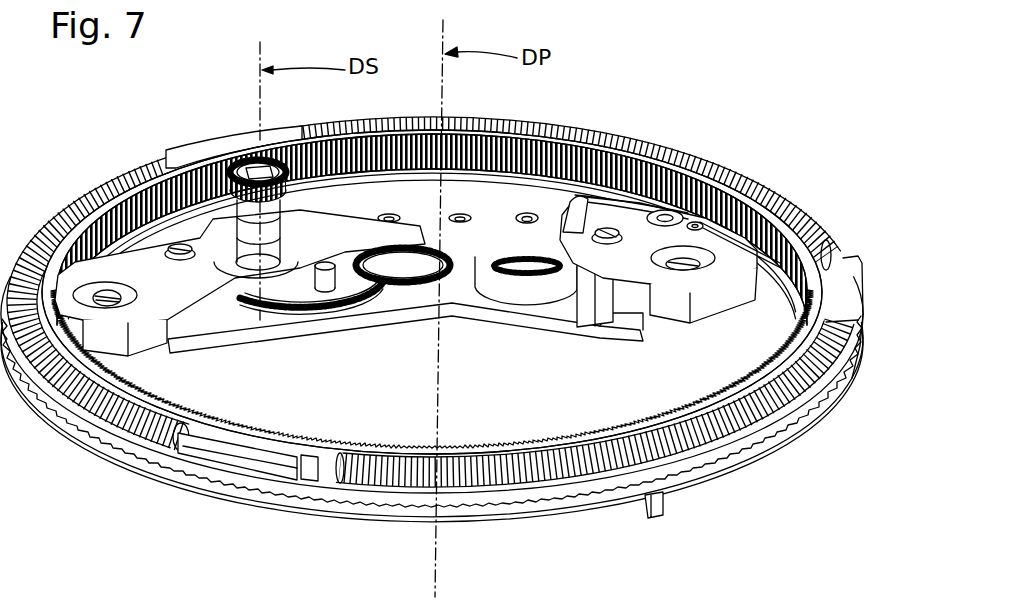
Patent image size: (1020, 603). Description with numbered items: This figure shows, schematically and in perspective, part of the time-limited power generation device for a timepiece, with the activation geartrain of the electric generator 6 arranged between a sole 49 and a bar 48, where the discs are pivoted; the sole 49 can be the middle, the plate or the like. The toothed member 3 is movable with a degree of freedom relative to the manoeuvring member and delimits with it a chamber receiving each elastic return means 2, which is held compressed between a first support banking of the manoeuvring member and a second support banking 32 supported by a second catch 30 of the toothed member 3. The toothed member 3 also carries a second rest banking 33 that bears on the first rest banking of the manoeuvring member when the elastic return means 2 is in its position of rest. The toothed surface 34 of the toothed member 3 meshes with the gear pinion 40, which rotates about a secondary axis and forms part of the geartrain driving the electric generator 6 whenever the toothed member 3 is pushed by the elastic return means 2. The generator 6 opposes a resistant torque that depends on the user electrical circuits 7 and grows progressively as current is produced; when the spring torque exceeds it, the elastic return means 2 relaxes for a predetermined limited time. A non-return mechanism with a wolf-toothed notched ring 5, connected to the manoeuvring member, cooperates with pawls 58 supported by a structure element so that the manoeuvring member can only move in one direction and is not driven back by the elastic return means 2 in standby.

The elastic return means 2 is at (393, 483).
The toothed member 3 is at (870, 298).
The notched ring 5 is at (520, 500).
The electric generator 6 is at (550, 297).
The user electrical circuits 7 is at (699, 190).
The second catch 30 is at (233, 462).
The second support banking 32 is at (165, 440).
The second rest banking 33 is at (309, 474).
The toothed surface 34 is at (258, 413).
The gear pinion 40 is at (242, 158).
The bar 48 is at (715, 295).
The sole 49 is at (620, 322).
The pawls 58 is at (655, 512).